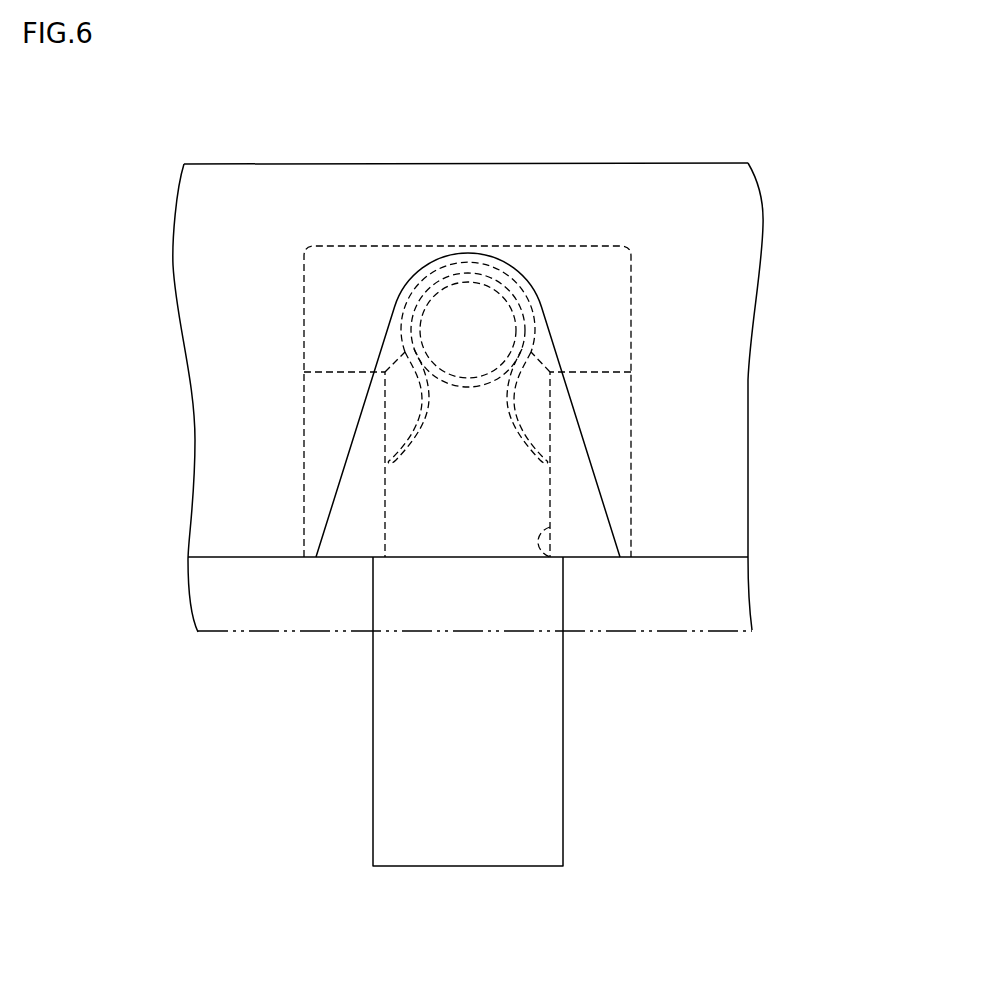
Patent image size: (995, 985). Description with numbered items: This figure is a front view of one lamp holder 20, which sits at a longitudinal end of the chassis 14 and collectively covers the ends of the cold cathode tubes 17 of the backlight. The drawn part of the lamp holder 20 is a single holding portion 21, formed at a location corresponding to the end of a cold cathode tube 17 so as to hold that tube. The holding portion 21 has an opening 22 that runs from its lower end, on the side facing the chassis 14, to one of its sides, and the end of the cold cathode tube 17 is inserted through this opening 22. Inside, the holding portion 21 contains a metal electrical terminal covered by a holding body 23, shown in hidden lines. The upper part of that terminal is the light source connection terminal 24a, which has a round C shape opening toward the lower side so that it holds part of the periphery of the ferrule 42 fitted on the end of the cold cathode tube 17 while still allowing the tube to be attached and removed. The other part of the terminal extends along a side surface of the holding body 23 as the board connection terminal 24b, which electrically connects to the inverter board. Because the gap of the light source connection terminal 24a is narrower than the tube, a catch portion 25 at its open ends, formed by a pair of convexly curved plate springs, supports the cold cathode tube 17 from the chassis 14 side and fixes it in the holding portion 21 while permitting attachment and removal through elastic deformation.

The chassis 14 is at (748, 590).
The cold cathode tube 17 is at (466, 318).
The lamp holder 20 is at (764, 227).
The holding portion 21 is at (426, 359).
The opening 22 is at (550, 560).
The holding body 23 is at (632, 317).
The light source connection terminal 24a is at (532, 287).
The board connection terminal 24b is at (395, 820).
The catch portion 25 is at (430, 410).
The ferrule 42 is at (486, 268).